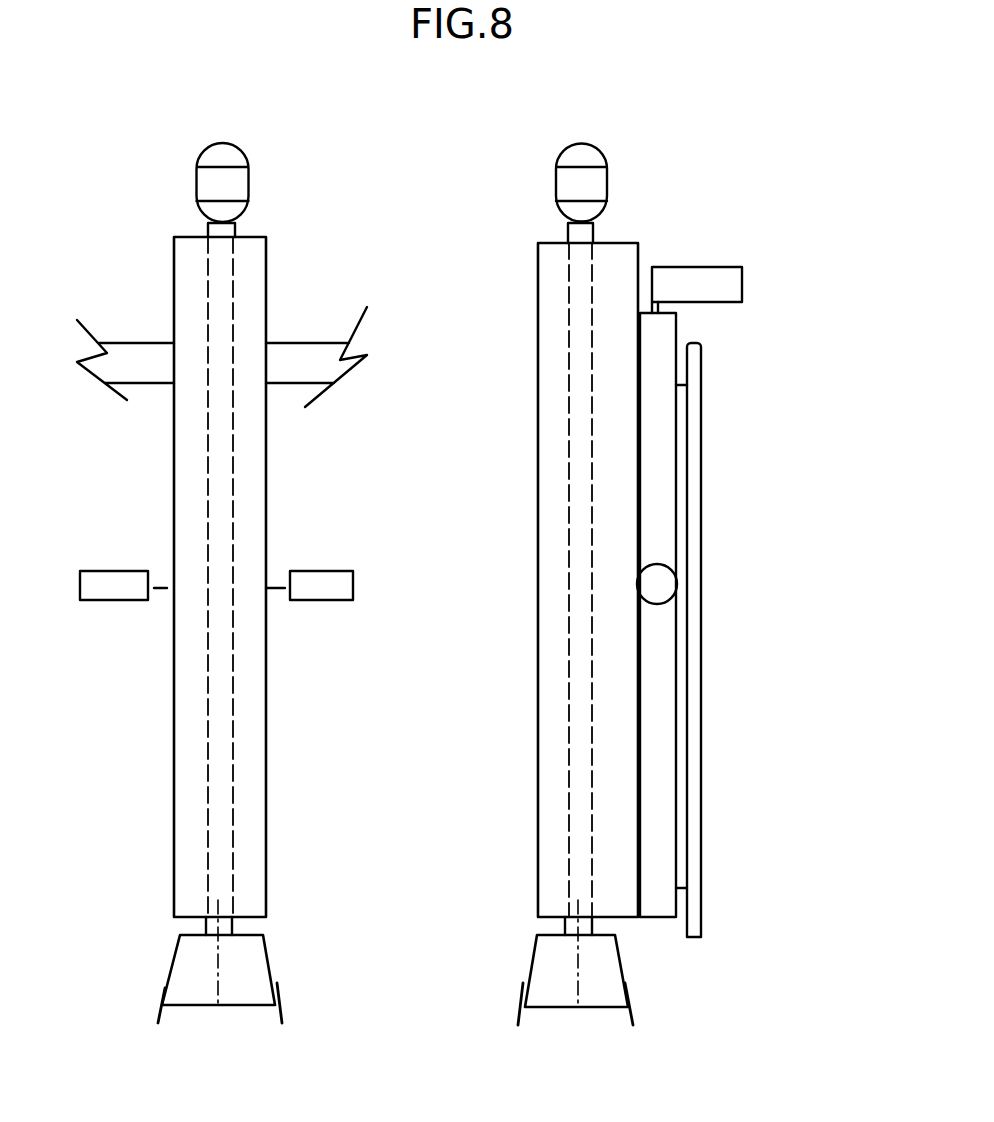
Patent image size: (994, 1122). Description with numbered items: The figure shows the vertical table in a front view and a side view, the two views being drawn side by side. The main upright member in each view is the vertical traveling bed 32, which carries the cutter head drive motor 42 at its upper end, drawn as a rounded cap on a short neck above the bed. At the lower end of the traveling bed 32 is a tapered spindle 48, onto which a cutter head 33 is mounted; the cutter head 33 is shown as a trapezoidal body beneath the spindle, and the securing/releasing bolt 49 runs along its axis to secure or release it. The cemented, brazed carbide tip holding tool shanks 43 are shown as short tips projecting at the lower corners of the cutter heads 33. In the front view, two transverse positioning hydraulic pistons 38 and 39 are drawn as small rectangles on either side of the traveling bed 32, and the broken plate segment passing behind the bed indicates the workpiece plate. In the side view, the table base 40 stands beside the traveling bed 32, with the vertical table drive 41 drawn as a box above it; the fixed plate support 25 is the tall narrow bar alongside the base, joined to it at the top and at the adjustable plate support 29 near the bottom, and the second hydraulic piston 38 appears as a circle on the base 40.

The fixed plate support 25 is at (702, 455).
The adjustable plate support 29 is at (683, 890).
The vertical traveling bed 32 is at (542, 245).
The cutter heads 33 is at (532, 945).
The transverse positioning hydraulic piston 38 is at (323, 571).
The transverse positioning hydraulic piston 39 is at (100, 570).
The table base 40 is at (676, 313).
The vertical table drive 41 is at (705, 265).
The cutter head drive motor 42 is at (558, 155).
The cemented carbide tip holding tool shanks 43 is at (518, 1023).
The tapered spindle 48 is at (207, 922).
The securing/releasing bolt 49 is at (218, 970).